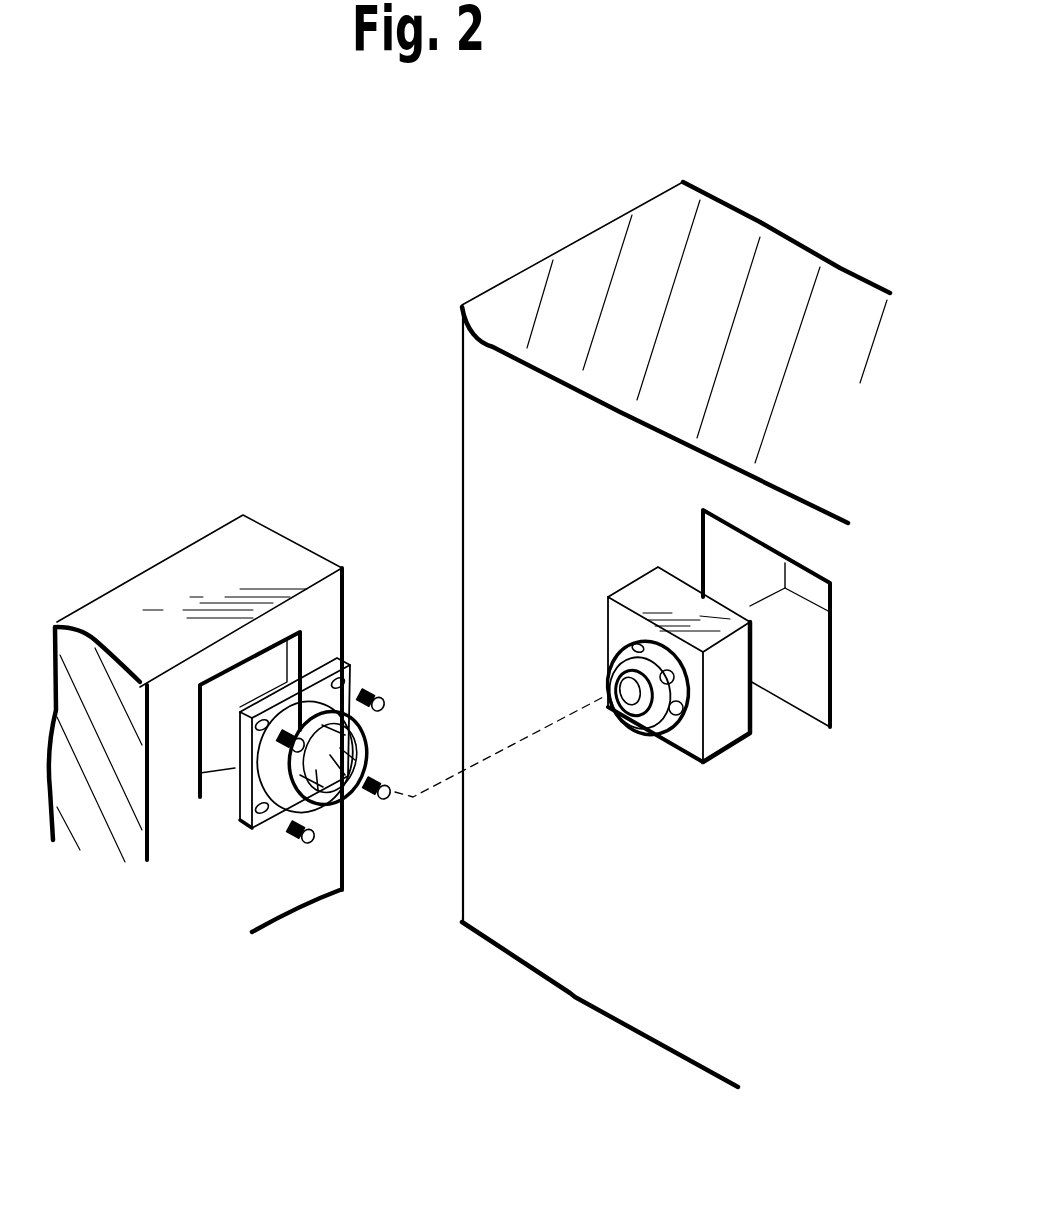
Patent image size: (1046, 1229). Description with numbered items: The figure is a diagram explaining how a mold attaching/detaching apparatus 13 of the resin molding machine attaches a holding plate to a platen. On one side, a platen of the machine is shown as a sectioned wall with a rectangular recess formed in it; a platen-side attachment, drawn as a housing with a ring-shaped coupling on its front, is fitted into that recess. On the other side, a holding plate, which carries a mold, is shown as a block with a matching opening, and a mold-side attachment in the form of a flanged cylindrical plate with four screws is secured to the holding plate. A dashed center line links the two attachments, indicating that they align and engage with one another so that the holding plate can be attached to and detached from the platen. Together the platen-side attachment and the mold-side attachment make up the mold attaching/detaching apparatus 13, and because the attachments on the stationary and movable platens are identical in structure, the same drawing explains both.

The mold attaching/detaching apparatus 13 is at (495, 826).